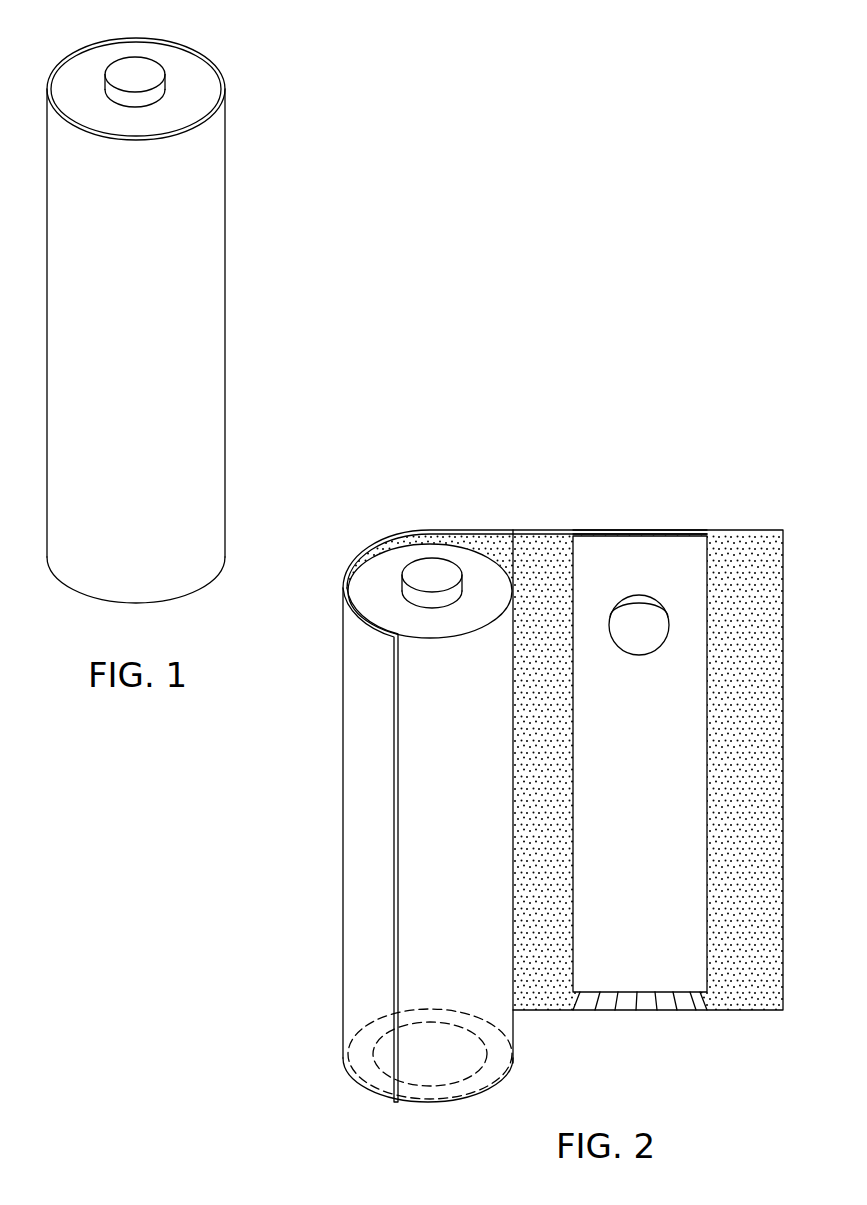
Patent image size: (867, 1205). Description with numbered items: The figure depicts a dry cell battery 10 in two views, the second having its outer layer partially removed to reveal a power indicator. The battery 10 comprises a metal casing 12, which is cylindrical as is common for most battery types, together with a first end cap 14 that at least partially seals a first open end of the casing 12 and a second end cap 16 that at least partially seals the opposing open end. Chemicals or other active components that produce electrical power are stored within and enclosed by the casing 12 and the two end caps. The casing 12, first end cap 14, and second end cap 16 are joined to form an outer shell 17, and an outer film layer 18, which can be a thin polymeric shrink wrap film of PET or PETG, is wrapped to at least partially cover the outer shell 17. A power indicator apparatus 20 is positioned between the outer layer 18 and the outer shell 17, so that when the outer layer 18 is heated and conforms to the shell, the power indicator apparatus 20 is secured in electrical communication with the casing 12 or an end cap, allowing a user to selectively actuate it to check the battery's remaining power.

In FIG. 1, the battery 10 is at (312, 129).
In FIG. 2, the battery 10 is at (262, 826).
In FIG. 2, the metal casing 12 is at (415, 927).
In FIG. 1, the first end cap 14 is at (78, 70).
In FIG. 2, the first end cap 14 is at (388, 568).
In FIG. 1, the second end cap 16 is at (75, 598).
In FIG. 2, the second end cap 16 is at (446, 1088).
In FIG. 2, the outer shell 17 is at (540, 1031).
In FIG. 1, the outer film layer 18 is at (224, 236).
In FIG. 2, the outer film layer 18 is at (760, 933).
In FIG. 2, the power indicator apparatus 20 is at (707, 555).